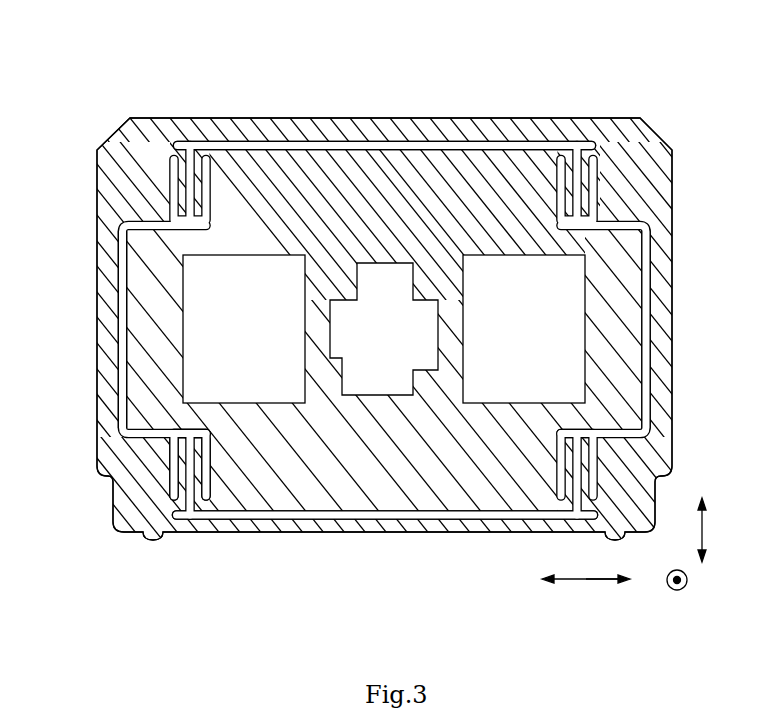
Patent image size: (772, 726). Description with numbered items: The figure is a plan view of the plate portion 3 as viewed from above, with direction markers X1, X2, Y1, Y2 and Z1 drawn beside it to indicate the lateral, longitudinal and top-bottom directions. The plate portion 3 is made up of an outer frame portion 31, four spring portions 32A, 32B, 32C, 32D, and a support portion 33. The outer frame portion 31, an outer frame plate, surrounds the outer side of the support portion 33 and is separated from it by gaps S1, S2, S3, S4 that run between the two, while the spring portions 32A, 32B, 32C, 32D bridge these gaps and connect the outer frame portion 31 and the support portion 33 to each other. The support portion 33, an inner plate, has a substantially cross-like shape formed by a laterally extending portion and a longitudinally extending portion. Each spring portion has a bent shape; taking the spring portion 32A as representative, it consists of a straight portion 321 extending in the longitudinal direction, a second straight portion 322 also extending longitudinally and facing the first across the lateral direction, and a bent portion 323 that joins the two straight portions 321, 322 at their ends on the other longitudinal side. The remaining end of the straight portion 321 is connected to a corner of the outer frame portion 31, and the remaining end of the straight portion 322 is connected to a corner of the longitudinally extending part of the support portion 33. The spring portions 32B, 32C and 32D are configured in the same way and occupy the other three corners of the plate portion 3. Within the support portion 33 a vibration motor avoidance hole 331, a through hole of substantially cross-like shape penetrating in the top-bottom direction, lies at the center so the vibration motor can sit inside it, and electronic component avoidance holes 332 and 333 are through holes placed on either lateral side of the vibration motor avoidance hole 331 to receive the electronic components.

The plate portion 3 is at (582, 104).
The outer frame portion 31 is at (673, 159).
The spring portion 32A is at (177, 478).
The spring portion 32B is at (588, 457).
The spring portion 32C is at (182, 213).
The spring portion 32D is at (583, 212).
The support portion 33 is at (640, 262).
The straight portion 321 is at (182, 484).
The straight portion 322 is at (200, 502).
The bent portion 323 is at (182, 426).
The vibration motor avoidance hole 331 is at (377, 262).
The electronic component avoidance hole 332 is at (243, 254).
The electronic component avoidance hole 333 is at (500, 254).
The gap S1 is at (121, 330).
The gap S2 is at (381, 142).
The gap S3 is at (650, 323).
The gap S4 is at (440, 518).
The X1 direction X1 is at (574, 597).
The X2 direction X2 is at (614, 597).
The Y1 direction Y1 is at (718, 560).
The Y2 direction Y2 is at (715, 505).
The Z1 direction Z1 is at (681, 596).